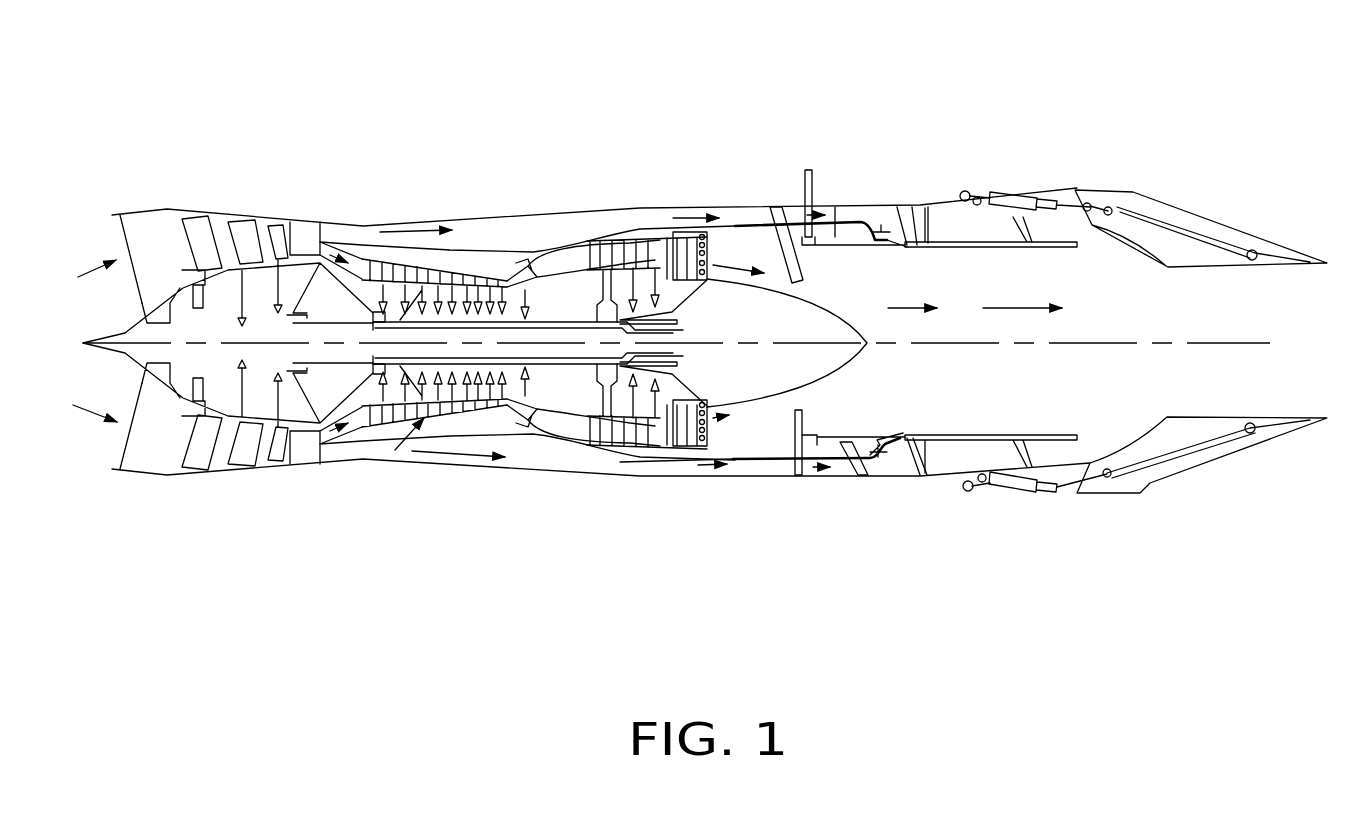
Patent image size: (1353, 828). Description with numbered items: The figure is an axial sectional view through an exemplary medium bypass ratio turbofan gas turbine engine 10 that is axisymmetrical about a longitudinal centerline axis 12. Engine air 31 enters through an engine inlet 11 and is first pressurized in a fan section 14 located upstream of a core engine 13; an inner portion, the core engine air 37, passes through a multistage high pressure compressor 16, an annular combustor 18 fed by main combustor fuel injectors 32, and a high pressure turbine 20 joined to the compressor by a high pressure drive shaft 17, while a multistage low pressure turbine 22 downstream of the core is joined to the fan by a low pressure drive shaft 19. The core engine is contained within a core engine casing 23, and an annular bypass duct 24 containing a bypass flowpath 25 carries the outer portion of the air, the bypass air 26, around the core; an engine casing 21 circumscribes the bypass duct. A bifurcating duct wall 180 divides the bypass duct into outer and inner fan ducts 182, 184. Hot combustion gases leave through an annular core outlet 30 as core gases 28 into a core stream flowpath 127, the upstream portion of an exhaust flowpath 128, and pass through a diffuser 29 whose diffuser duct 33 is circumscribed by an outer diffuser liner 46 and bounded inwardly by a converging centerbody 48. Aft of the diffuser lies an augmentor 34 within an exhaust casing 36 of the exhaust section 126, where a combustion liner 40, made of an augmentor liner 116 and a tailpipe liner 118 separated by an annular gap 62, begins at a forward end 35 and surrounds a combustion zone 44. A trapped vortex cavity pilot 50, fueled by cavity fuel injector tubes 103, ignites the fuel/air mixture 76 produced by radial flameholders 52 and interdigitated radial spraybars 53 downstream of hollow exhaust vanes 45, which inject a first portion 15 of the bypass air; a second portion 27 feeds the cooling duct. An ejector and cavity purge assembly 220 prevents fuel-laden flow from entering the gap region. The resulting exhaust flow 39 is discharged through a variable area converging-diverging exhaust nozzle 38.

The turbofan gas turbine engine 10 is at (556, 100).
The engine inlet 11 is at (125, 447).
The centerline axis 12 is at (1082, 338).
The core engine 13 is at (395, 450).
The fan section 14 is at (237, 213).
The first portion of the bypass air 15 is at (680, 455).
The high pressure compressor 16 is at (413, 260).
The high pressure drive shaft 17 is at (552, 362).
The combustor 18 is at (558, 257).
The low pressure drive shaft 19 is at (572, 352).
The high pressure turbine 20 is at (605, 205).
The engine casing 21 is at (497, 213).
The low pressure turbine 22 is at (657, 237).
The core engine casing 23 is at (487, 410).
The bypass duct 24 is at (483, 227).
The bypass flowpath 25 is at (745, 225).
The bypass air 26 is at (417, 232).
The second portion of the bypass air 27 is at (808, 172).
The core gases 28 is at (686, 435).
The diffuser 29 is at (724, 285).
The core outlet 30 is at (708, 408).
The engine air 31 is at (80, 268).
The main combustor fuel injectors 32 is at (528, 405).
The diffuser duct 33 is at (776, 432).
The augmentor 34 is at (822, 405).
The forward end of the combustion liner 35 is at (840, 240).
The exhaust casing 36 is at (952, 205).
The core engine air 37 is at (325, 437).
The exhaust nozzle 38 is at (1212, 138).
The exhaust flow 39 is at (735, 280).
The combustion liner 40 is at (958, 250).
The combustion zone 44 is at (921, 304).
The exhaust vanes 45 is at (740, 224).
The outer diffuser liner 46 is at (736, 242).
The centerbody 48 is at (865, 349).
The trapped vortex cavity pilot 50 is at (813, 248).
The radial flameholders 52 is at (805, 268).
The radial spraybars 53 is at (800, 420).
The gap 62 is at (905, 248).
The fuel/air mixture 76 is at (910, 318).
The cavity fuel injector tubes 103 is at (813, 184).
The augmentor liner 116 is at (868, 438).
The tailpipe liner 118 is at (936, 436).
The exhaust section 126 is at (925, 168).
The core stream flowpath 127 is at (770, 265).
The exhaust flowpath 128 is at (1069, 394).
The bifurcating duct wall 180 is at (746, 472).
The outer fan duct 182 is at (742, 475).
The inner fan duct 184 is at (767, 473).
The ejector and cavity purge assembly 220 is at (903, 214).